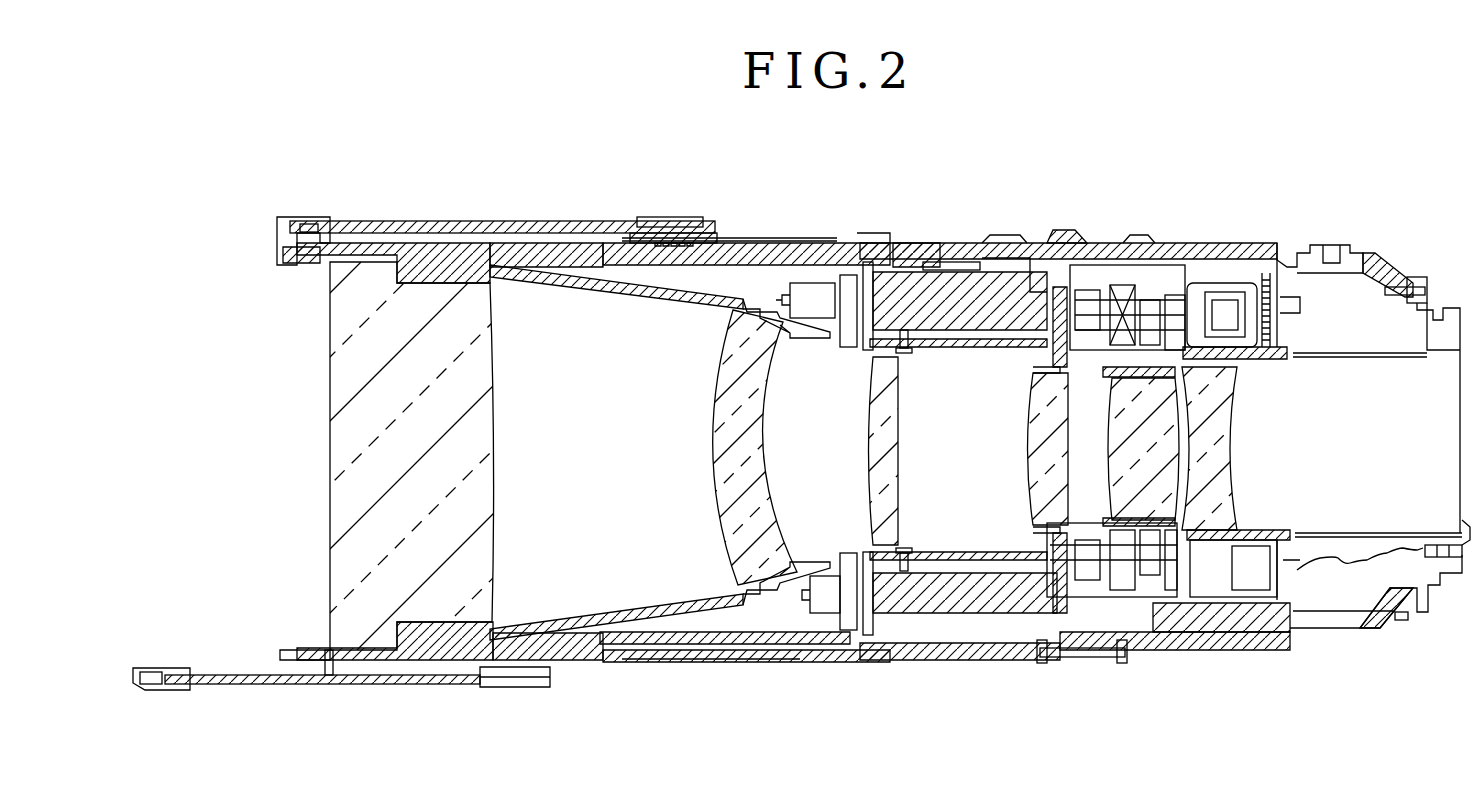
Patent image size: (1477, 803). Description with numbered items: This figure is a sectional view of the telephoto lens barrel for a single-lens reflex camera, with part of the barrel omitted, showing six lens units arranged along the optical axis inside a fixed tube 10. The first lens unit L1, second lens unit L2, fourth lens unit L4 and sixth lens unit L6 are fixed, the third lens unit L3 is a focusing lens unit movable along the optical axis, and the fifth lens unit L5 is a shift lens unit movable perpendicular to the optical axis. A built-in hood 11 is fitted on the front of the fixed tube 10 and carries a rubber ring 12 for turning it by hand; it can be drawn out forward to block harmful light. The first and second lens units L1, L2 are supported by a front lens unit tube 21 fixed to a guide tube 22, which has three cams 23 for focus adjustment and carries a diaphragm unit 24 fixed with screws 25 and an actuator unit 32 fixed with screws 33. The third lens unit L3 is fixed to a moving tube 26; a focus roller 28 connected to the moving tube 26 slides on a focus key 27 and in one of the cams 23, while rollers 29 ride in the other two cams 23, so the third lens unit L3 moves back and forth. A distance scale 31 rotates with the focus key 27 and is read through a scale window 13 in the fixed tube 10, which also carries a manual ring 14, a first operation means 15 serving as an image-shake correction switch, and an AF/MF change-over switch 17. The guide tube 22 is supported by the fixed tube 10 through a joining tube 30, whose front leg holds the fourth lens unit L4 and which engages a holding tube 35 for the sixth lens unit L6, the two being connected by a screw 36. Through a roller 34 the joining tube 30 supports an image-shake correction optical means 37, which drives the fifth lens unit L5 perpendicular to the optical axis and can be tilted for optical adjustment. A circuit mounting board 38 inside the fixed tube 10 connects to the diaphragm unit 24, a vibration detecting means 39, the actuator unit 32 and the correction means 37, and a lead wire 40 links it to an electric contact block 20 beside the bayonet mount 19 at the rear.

The fixed tube 10 is at (1212, 243).
The built-in hood 11 is at (430, 228).
The rubber ring 12 is at (665, 222).
The scale window 13 is at (943, 242).
The manual ring 14 is at (758, 252).
The first operation means 15 is at (1062, 300).
The AF/MF change-over switch 17 is at (1335, 246).
The mount 19 is at (1420, 285).
The electric contact block 20 is at (1462, 560).
The front lens unit tube 21 is at (470, 262).
The guide tube 22 is at (598, 250).
The cams 23 is at (905, 352).
The diaphragm unit 24 is at (800, 298).
The screws 25 is at (833, 247).
The moving tube 26 is at (867, 547).
The focus key 27 is at (993, 340).
The focus roller 28 is at (887, 272).
The rollers 29 is at (893, 660).
The joining tube 30 is at (1143, 297).
The distance scale 31 is at (965, 262).
The actuator unit 32 is at (995, 262).
The screws 33 is at (1030, 290).
The roller 34 is at (1092, 290).
The holding tube 35 is at (1253, 293).
The screw 36 is at (1170, 290).
The image-shake correction optical means 37 is at (1137, 577).
The circuit mounting board 38 is at (1253, 600).
The vibration detecting means 39 is at (1232, 312).
The lead wire 40 is at (1345, 562).
The first lens unit L1 is at (348, 428).
The second lens unit L2 is at (720, 443).
The third lens unit L3 is at (868, 445).
The fourth lens unit L4 is at (1030, 440).
The fifth lens unit L5 is at (1102, 449).
The sixth lens unit L6 is at (1238, 450).